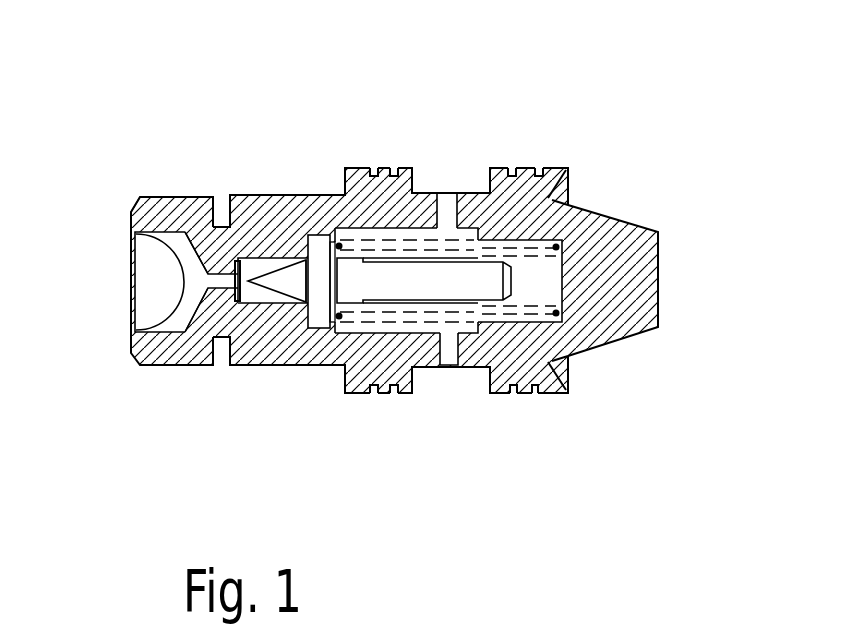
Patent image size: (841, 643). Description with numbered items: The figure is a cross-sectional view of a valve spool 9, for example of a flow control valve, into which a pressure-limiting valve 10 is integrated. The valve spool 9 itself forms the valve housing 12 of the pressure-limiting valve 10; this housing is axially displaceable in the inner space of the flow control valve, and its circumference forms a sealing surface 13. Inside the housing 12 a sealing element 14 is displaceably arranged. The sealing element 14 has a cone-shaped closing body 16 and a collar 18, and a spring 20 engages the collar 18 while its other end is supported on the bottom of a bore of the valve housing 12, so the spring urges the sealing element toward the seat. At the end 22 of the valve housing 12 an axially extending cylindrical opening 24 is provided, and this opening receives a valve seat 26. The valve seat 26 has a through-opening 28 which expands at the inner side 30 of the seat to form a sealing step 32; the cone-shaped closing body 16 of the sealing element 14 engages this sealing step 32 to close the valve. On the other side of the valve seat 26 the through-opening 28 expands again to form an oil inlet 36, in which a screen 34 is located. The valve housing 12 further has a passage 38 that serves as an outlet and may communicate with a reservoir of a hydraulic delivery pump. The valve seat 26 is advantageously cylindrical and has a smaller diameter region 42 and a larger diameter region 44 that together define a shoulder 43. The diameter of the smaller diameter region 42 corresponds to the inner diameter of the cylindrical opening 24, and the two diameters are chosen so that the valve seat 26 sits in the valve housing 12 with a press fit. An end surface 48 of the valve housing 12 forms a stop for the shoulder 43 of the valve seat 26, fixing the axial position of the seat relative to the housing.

The valve spool 9 is at (590, 210).
The pressure-limiting valve 10 is at (148, 123).
The valve housing 12 is at (413, 280).
The sealing surface 13 is at (362, 168).
The sealing element 14 is at (486, 195).
The cone-shaped closing body 16 is at (290, 245).
The collar 18 is at (318, 252).
The spring 20 is at (383, 205).
The end 22 is at (225, 215).
The cylindrical opening 24 is at (233, 358).
The valve seat 26 is at (162, 366).
The through-opening 28 is at (207, 258).
The inner side 30 is at (283, 278).
The sealing step 32 is at (297, 318).
The screen 34 is at (133, 300).
The oil inlet 36 is at (191, 310).
The passage 38 is at (449, 348).
The smaller diameter region 42 is at (263, 307).
The shoulder 43 is at (221, 352).
The larger diameter region 44 is at (137, 194).
The end surface 48 is at (232, 215).